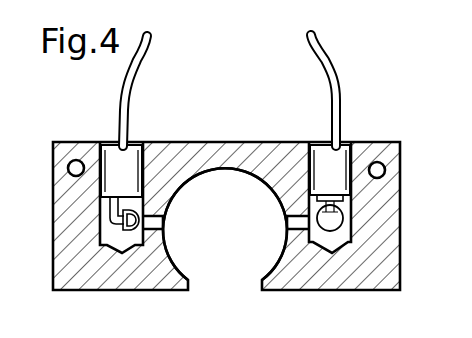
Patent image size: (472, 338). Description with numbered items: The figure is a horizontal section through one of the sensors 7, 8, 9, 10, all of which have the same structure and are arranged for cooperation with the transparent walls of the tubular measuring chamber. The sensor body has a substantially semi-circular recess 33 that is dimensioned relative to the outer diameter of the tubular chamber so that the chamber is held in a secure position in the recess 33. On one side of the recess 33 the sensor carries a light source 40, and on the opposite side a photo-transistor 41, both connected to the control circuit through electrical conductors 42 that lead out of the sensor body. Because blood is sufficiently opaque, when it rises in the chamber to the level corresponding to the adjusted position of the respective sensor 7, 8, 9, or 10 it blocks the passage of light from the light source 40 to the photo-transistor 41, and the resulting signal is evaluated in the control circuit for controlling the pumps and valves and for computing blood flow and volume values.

The sensor 7 is at (226, 240).
The sensor 8 is at (226, 240).
The sensor 9 is at (226, 240).
The sensor 10 is at (350, 290).
The semi-circular recess 33 is at (238, 169).
The light source 40 is at (338, 228).
The photo-transistor 41 is at (112, 234).
The electrical conductors 42 is at (129, 82).